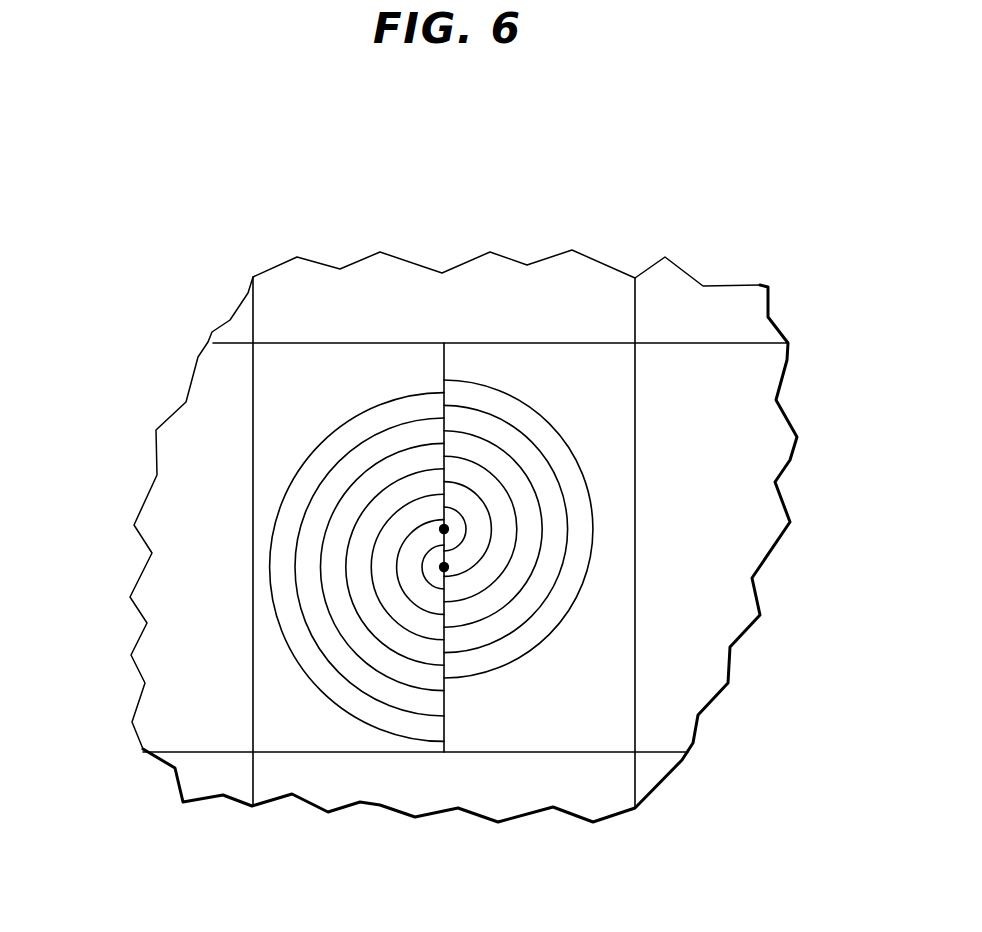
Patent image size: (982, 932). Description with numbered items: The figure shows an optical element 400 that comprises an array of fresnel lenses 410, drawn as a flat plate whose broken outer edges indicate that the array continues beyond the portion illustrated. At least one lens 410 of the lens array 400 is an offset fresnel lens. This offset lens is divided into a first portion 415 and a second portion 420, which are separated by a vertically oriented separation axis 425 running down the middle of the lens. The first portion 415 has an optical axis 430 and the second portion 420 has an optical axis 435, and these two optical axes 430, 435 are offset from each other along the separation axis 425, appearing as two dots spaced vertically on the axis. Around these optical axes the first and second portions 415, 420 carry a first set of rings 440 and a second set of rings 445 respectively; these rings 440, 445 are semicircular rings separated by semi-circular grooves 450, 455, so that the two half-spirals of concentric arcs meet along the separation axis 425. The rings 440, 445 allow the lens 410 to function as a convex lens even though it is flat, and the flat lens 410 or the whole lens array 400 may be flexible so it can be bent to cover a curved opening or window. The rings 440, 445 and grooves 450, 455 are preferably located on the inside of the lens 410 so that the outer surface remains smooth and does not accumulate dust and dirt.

The optical element 400 is at (152, 808).
The fresnel lens 410 is at (333, 790).
The first portion 415 is at (614, 717).
The second portion 420 is at (278, 714).
The separation axis 425 is at (447, 726).
The optical axis of the first portion 430 is at (444, 529).
The optical axis of the second portion 435 is at (444, 567).
The first set of rings 440 is at (668, 423).
The second set of rings 445 is at (258, 542).
The semi-circular grooves 450 is at (503, 422).
The semi-circular grooves 455 is at (345, 458).